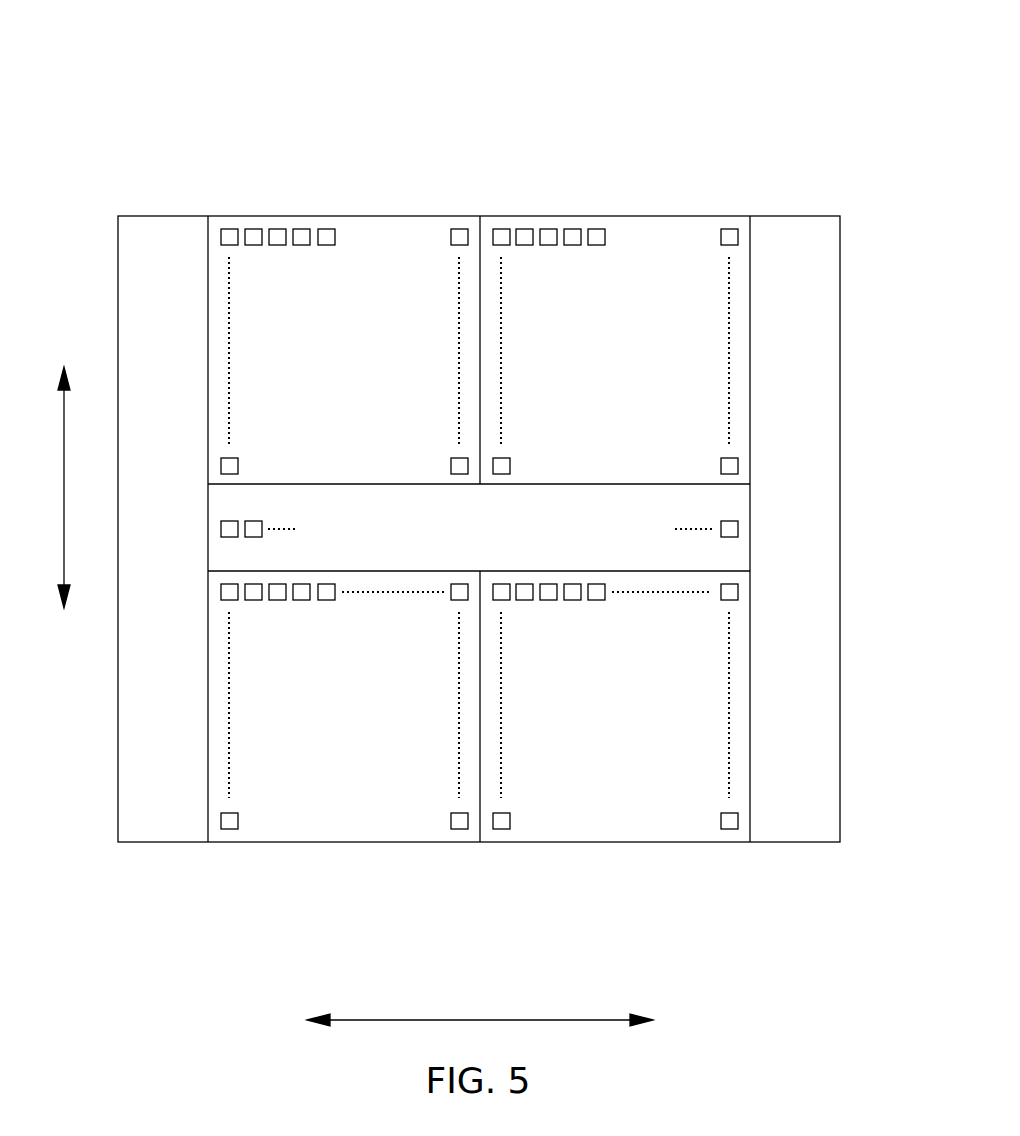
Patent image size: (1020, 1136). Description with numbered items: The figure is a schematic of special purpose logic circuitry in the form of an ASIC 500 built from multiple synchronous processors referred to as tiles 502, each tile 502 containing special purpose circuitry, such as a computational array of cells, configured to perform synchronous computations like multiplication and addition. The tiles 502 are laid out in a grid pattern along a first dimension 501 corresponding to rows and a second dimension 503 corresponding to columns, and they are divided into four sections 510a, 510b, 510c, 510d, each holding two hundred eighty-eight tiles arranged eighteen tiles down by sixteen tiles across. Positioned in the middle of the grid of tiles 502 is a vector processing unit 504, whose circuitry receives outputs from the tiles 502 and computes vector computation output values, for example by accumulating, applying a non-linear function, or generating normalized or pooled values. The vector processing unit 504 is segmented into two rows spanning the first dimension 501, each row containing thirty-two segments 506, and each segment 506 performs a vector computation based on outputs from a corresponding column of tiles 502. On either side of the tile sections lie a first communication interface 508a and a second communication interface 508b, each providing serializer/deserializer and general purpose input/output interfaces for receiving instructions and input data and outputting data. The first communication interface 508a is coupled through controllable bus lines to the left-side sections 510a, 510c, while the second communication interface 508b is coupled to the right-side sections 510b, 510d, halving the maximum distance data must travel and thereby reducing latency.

The ASIC 500 is at (145, 40).
The first dimension 501 is at (481, 1018).
The tile 502 is at (224, 227).
The second dimension 503 is at (63, 487).
The vector processing unit 504 is at (722, 498).
The segment 506 is at (738, 528).
The first communication interface 508a is at (151, 229).
The second communication interface 508b is at (797, 229).
The tile section 510a is at (353, 178).
The tile section 510b is at (631, 178).
The tile section 510c is at (335, 850).
The tile section 510d is at (631, 850).